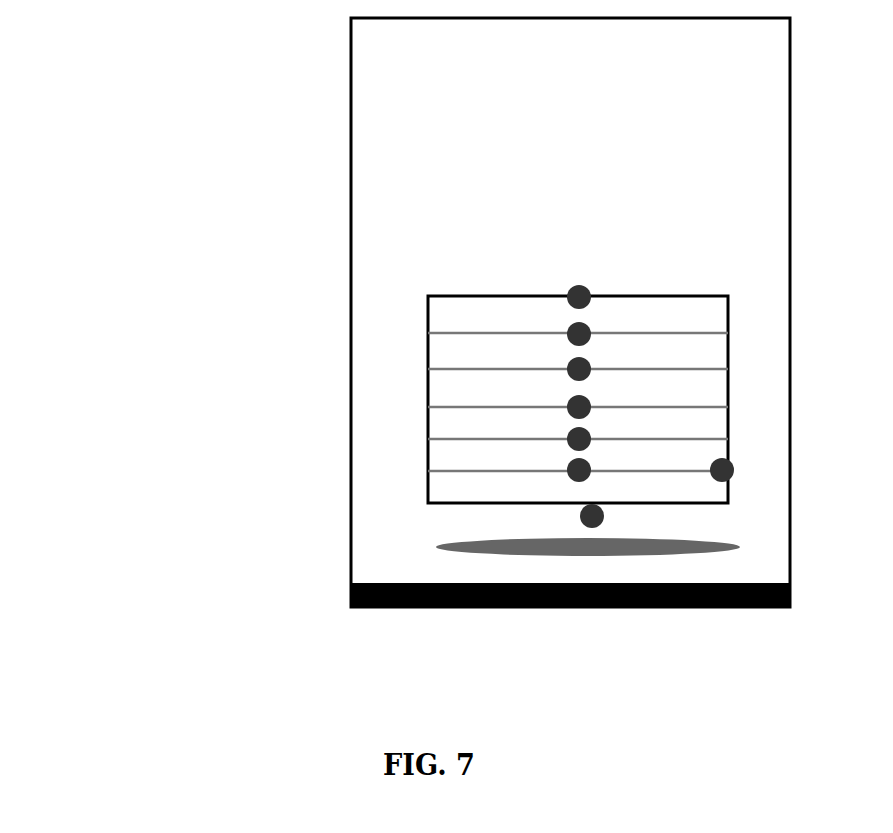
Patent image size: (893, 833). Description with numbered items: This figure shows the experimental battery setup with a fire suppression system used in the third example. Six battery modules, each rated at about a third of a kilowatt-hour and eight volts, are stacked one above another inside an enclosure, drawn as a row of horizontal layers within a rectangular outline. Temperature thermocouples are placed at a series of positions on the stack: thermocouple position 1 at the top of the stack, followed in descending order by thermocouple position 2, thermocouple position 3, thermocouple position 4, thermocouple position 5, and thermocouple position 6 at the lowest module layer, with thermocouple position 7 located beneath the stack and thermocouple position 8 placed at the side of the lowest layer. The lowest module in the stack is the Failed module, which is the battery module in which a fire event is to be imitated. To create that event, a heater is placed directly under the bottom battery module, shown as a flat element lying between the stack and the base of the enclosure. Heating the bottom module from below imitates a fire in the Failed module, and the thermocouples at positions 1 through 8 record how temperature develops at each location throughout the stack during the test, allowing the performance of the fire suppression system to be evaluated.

The failed module Failed module is at (377, 406).
The element heater is at (705, 567).
The thermocouple position 1 is at (579, 297).
The thermocouple position 2 is at (579, 334).
The thermocouple position 3 is at (579, 369).
The thermocouple position 4 is at (579, 407).
The thermocouple position 5 is at (579, 439).
The thermocouple position 6 is at (579, 470).
The thermocouple position 7 is at (592, 516).
The thermocouple position 8 is at (722, 470).